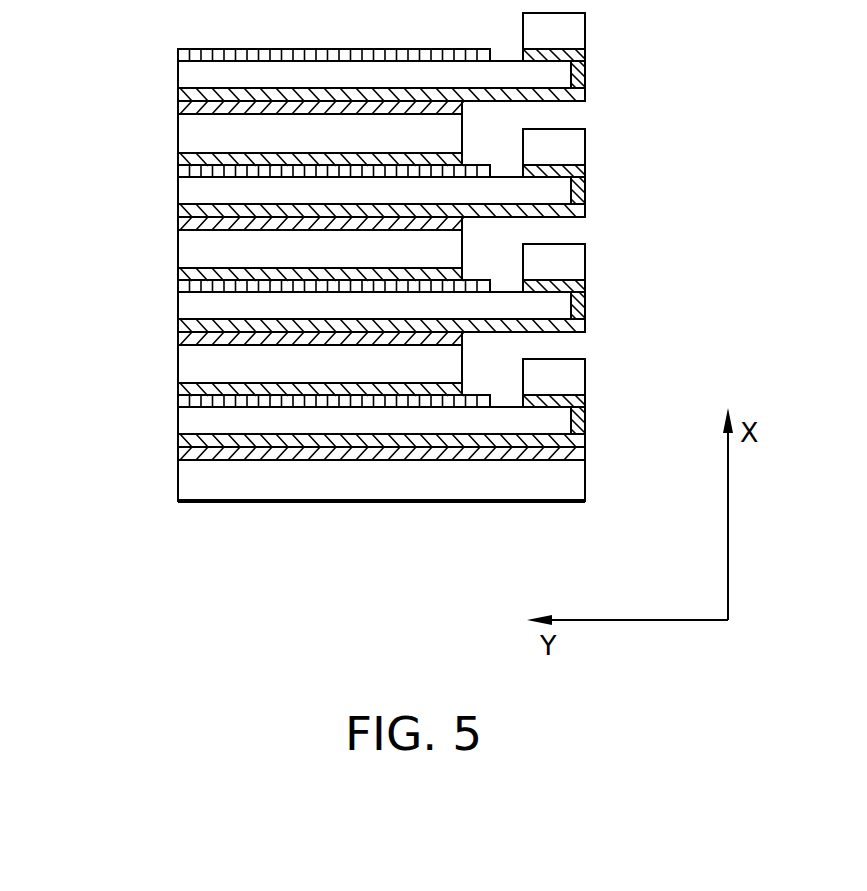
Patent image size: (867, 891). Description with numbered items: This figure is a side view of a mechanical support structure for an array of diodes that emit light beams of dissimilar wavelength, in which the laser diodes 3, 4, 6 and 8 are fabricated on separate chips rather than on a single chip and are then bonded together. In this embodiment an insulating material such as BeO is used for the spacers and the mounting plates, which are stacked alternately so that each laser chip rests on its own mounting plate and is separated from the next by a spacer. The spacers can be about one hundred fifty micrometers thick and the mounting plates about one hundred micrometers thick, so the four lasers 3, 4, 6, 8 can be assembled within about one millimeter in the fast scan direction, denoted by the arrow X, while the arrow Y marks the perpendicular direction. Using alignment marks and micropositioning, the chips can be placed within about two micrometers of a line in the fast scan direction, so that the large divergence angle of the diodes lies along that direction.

The laser diode 3 is at (575, 38).
The laser diode 4 is at (575, 153).
The laser diode 6 is at (575, 268).
The laser diode 8 is at (575, 383).